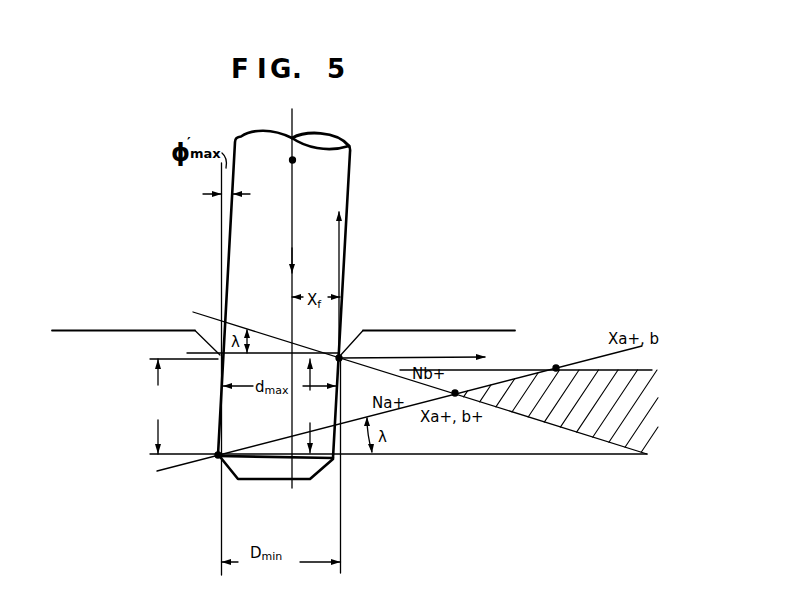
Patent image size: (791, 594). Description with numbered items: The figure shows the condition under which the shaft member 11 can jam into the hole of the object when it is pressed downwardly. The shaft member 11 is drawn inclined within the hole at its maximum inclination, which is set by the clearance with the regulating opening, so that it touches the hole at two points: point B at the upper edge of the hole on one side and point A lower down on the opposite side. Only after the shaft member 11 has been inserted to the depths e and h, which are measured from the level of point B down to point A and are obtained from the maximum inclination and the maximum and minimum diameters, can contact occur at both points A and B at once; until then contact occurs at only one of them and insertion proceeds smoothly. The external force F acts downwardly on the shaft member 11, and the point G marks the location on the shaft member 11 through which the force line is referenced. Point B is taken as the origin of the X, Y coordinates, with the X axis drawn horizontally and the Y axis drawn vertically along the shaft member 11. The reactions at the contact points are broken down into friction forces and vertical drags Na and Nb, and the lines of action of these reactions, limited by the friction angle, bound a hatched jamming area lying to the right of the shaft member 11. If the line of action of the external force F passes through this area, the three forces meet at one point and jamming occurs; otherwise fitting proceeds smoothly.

The shaft member 11 is at (347, 164).
The center of gravity G is at (300, 164).
The point A is at (210, 467).
The point B is at (344, 372).
The external force F is at (283, 259).
The X coordinate axis X is at (419, 361).
The Y coordinate axis Y is at (337, 274).
The vertical drag at point A Na is at (398, 465).
The vertical drag at point B Nb is at (526, 359).
The depth of insertion h is at (158, 406).
The depth of insertion e is at (310, 406).